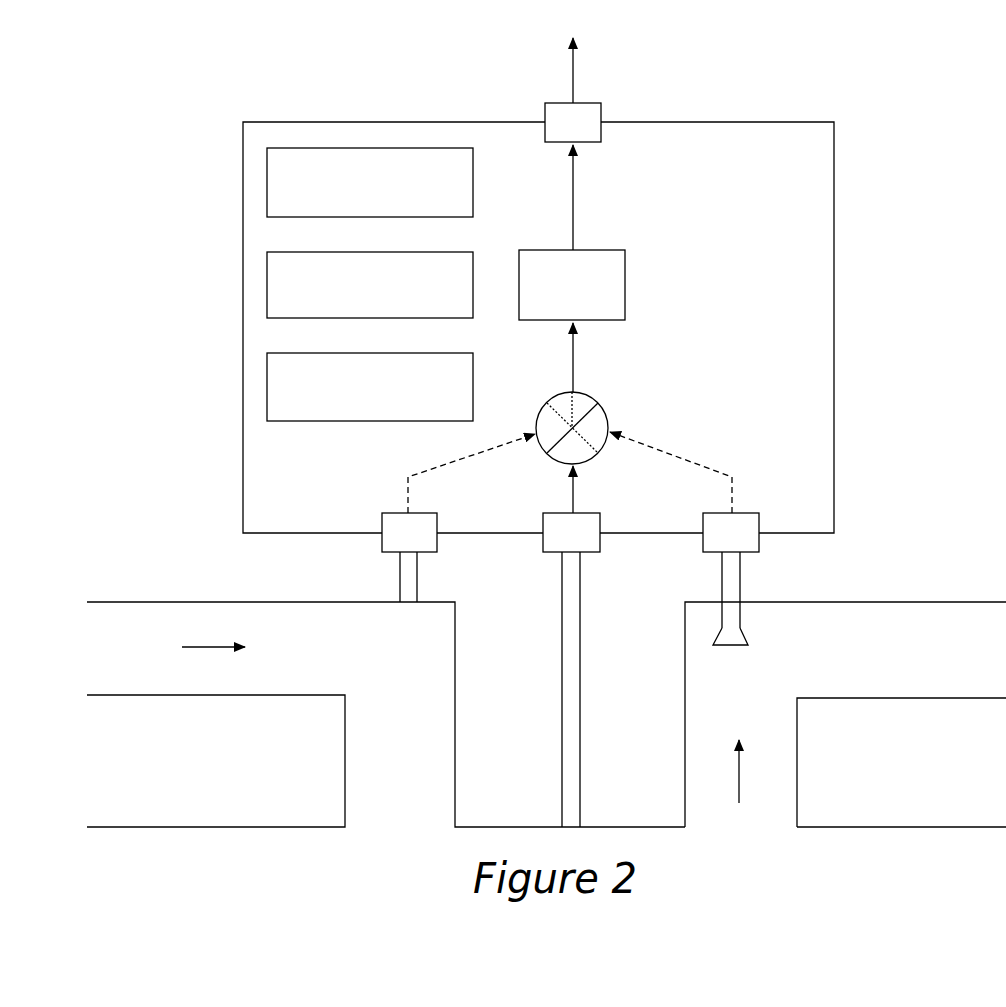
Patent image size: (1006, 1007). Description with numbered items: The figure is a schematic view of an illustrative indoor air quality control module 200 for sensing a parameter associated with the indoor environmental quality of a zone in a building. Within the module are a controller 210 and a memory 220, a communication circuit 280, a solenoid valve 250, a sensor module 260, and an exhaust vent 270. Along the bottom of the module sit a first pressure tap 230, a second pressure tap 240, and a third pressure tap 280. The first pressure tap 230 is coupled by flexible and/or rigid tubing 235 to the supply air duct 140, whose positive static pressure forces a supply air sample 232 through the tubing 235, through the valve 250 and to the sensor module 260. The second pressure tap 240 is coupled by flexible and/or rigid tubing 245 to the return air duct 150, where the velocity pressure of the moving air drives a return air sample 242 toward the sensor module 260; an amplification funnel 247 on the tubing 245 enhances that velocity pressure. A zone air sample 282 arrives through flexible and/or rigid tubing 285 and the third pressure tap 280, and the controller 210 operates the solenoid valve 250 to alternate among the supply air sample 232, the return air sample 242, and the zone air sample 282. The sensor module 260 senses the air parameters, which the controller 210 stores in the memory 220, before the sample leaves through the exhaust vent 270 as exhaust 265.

The IAQ control module 200 is at (835, 347).
The controller 210 is at (267, 383).
The memory 220 is at (267, 283).
The communication circuit 280 is at (267, 181).
The first pressure tap 230 is at (390, 513).
The supply air sample 232 is at (460, 453).
The flexible and/or rigid tubing 235 is at (403, 580).
The second pressure tap 240 is at (745, 513).
The return air sample 242 is at (680, 455).
The flexible and/or rigid tubing 245 is at (738, 582).
The amplification funnel 247 is at (750, 640).
The solenoid valve 250 is at (548, 455).
The sensor module 260 is at (608, 250).
The exhaust vent 265 is at (572, 80).
The exhaust vent 270 is at (597, 103).
The zone air sample 282 is at (572, 500).
The flexible and/or rigid tubing 285 is at (565, 636).
The supply air duct 140 is at (433, 698).
The return air duct 150 is at (700, 700).